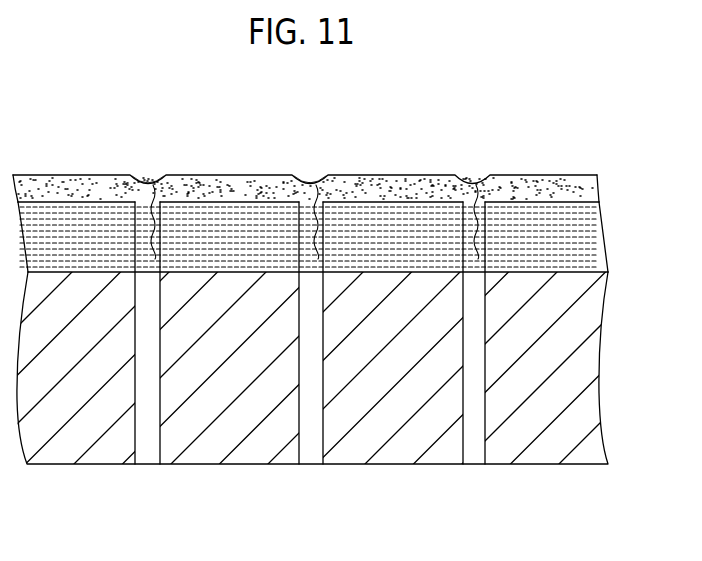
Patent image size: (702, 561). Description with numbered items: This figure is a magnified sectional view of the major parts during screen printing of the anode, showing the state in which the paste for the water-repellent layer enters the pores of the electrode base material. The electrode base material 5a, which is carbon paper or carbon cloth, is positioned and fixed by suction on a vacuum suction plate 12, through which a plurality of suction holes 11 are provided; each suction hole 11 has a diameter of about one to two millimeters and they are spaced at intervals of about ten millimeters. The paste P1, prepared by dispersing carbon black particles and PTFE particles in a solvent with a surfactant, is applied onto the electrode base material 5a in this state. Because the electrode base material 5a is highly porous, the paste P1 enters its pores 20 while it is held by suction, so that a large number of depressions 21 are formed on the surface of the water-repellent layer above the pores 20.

The vacuum suction plate 12 is at (605, 377).
The electrode base material 5a is at (580, 239).
The paste for the water-repellent layer P1 is at (474, 235).
The suction holes 11 is at (152, 447).
The pores 20 is at (153, 185).
The depressions 21 is at (146, 182).